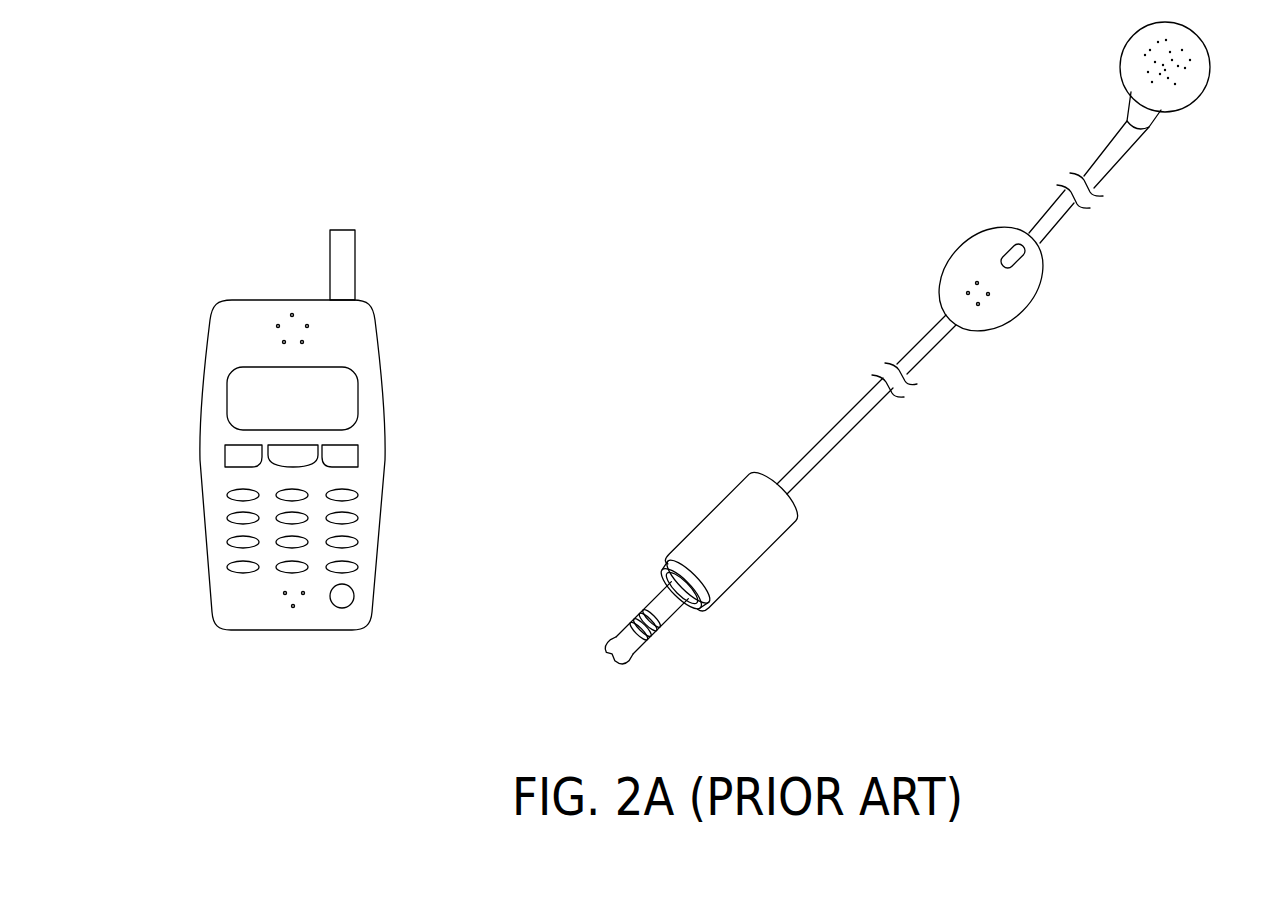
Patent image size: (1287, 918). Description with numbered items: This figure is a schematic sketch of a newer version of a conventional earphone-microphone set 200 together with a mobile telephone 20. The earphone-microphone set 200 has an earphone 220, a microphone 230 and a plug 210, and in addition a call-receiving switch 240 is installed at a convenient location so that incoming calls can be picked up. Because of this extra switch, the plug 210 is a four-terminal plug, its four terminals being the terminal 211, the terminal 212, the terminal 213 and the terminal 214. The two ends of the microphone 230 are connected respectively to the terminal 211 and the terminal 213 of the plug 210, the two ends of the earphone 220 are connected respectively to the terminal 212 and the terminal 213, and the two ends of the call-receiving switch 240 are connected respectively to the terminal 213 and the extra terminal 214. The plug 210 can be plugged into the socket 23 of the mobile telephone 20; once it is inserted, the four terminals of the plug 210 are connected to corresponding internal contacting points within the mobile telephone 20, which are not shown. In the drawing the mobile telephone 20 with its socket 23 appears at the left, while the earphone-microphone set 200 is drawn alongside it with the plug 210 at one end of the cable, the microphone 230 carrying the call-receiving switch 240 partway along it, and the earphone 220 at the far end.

The mobile telephone 20 is at (275, 630).
The socket 23 is at (343, 608).
The earphone-microphone set 200 is at (702, 175).
The plug 210 is at (738, 461).
The terminal 211 is at (622, 667).
The terminal 212 is at (650, 637).
The terminal 213 is at (682, 612).
The terminal 214 is at (712, 613).
The earphone 220 is at (1196, 100).
The microphone 230 is at (965, 292).
The call-receiving switch 240 is at (1006, 247).